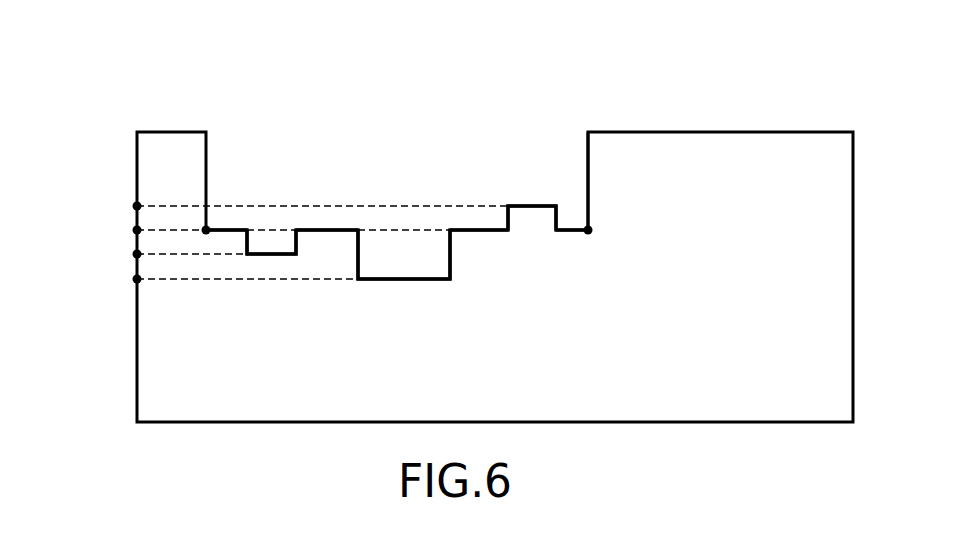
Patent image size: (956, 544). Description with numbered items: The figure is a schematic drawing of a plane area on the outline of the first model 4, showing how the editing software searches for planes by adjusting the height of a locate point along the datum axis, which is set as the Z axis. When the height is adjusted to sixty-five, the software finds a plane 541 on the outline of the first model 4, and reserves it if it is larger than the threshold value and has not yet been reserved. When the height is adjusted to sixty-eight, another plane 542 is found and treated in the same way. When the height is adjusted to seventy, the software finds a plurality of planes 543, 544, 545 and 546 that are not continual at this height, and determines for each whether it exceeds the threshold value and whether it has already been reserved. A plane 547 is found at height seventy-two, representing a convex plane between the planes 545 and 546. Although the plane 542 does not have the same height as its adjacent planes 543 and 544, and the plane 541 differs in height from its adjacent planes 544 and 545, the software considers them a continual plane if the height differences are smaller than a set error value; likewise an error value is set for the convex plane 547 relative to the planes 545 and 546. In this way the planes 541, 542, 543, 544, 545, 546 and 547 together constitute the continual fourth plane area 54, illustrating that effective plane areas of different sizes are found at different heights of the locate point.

The first model 4 is at (611, 51).
The fourth plane area 54 is at (318, 222).
The plane 541 is at (393, 277).
The plane 542 is at (272, 253).
The plane 543 is at (226, 228).
The plane 544 is at (338, 228).
The plane 545 is at (468, 228).
The plane 546 is at (568, 227).
The plane 547 is at (532, 205).